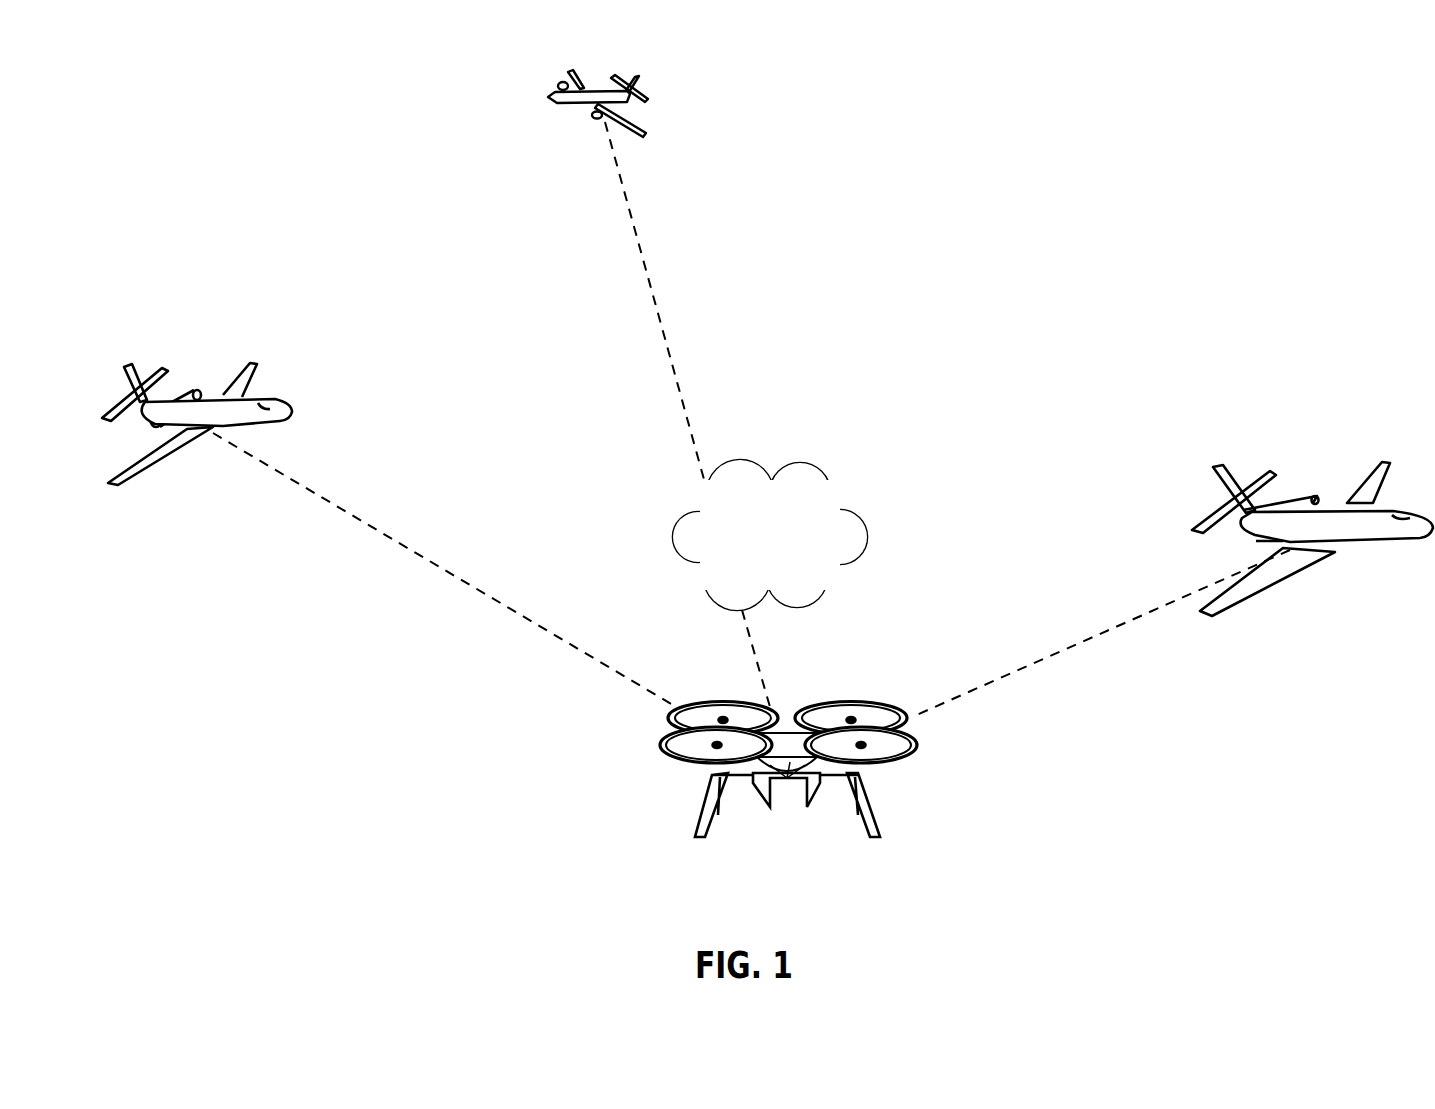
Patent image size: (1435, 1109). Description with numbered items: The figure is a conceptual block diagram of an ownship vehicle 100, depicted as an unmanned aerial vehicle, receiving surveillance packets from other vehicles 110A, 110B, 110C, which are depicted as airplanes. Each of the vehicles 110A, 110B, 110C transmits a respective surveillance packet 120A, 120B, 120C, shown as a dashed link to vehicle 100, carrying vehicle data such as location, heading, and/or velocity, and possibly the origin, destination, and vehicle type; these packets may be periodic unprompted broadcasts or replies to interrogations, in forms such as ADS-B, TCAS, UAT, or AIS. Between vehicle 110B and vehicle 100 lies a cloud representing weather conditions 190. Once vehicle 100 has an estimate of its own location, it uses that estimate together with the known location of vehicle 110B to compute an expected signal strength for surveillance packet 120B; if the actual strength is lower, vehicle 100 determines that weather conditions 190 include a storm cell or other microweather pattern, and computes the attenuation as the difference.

The vehicle 100 is at (650, 832).
The vehicle 110A is at (312, 352).
The vehicle 110B is at (687, 140).
The vehicle 110C is at (1175, 462).
The surveillance packet 120A is at (457, 578).
The surveillance packet 120B is at (672, 357).
The surveillance packet 120C is at (1130, 620).
The weather conditions 190 is at (751, 581).